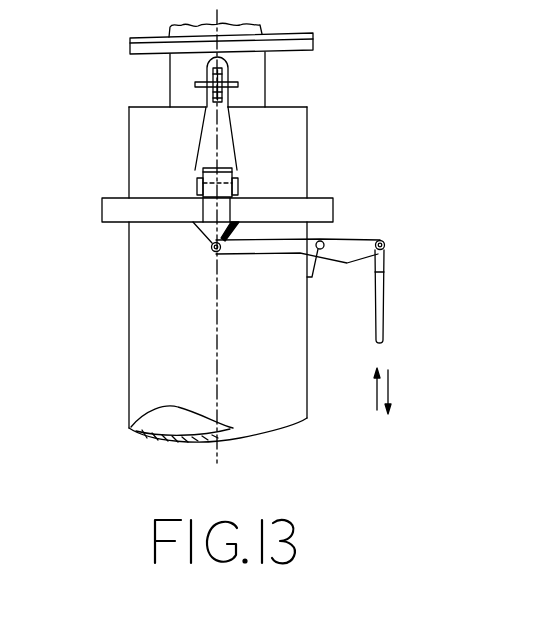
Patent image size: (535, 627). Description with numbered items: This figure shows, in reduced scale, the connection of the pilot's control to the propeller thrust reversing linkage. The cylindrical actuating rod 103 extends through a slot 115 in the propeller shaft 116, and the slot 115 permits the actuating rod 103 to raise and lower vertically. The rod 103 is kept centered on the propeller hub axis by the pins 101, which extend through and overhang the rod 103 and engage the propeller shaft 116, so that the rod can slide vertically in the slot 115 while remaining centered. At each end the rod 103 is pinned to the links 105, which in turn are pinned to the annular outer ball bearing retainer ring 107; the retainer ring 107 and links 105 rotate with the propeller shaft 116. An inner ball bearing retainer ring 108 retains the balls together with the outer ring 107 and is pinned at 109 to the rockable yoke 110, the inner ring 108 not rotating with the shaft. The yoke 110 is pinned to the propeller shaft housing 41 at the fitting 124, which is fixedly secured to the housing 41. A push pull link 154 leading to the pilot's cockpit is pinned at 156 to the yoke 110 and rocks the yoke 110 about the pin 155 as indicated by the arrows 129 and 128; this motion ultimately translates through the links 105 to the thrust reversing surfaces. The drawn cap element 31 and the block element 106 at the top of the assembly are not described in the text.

The wavy sealing cap 31 is at (260, 24).
The slot 115 is at (170, 62).
The propeller shaft 116 is at (265, 72).
The propeller shaft housing 41 is at (129, 327).
The pins 101 is at (197, 90).
The actuating rod 103 is at (230, 86).
The links 105 is at (233, 153).
The guide block 106 is at (200, 185).
The annular outer ball bearing retainer ring 107 is at (115, 207).
The inner ball bearing retainer ring 108 is at (207, 230).
The pin connection 109 is at (211, 252).
The rockable yoke 110 is at (350, 250).
The pin 155 is at (333, 235).
The pin connection 156 is at (384, 246).
The fitting 124 is at (321, 262).
The push pull link 154 is at (384, 315).
The arrow 128 is at (390, 375).
The arrow 129 is at (375, 387).